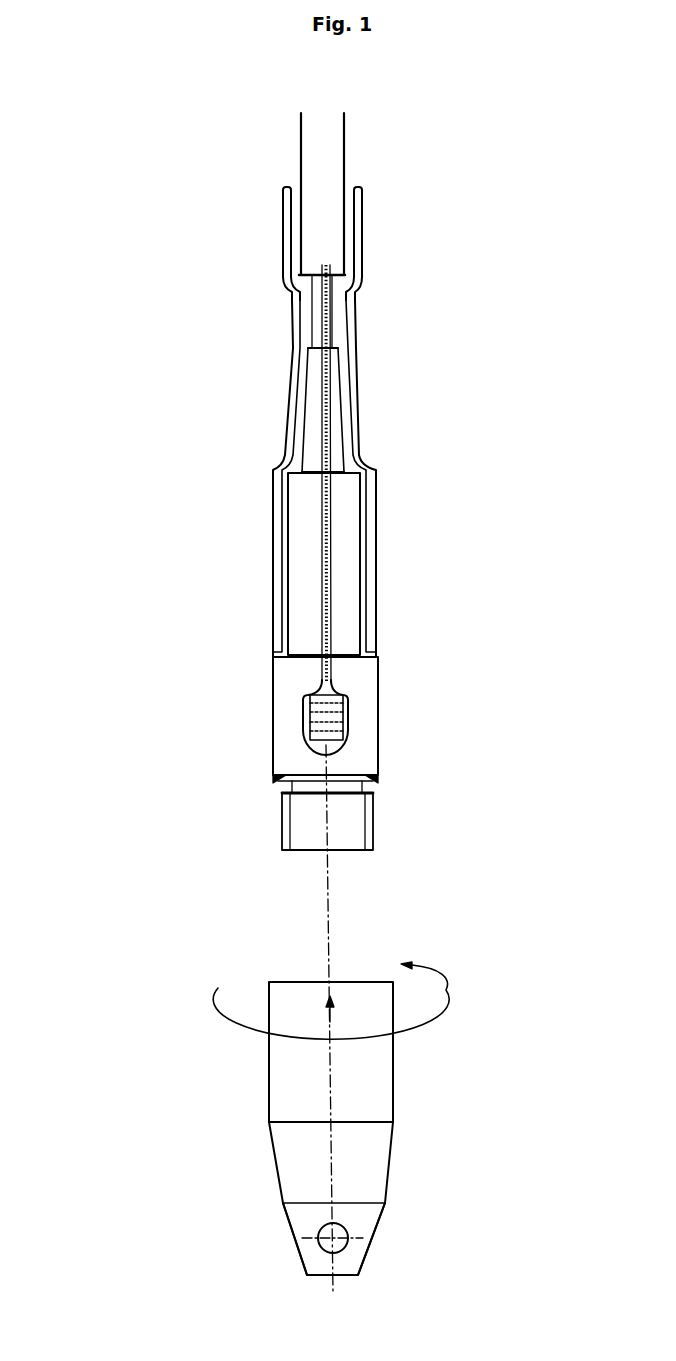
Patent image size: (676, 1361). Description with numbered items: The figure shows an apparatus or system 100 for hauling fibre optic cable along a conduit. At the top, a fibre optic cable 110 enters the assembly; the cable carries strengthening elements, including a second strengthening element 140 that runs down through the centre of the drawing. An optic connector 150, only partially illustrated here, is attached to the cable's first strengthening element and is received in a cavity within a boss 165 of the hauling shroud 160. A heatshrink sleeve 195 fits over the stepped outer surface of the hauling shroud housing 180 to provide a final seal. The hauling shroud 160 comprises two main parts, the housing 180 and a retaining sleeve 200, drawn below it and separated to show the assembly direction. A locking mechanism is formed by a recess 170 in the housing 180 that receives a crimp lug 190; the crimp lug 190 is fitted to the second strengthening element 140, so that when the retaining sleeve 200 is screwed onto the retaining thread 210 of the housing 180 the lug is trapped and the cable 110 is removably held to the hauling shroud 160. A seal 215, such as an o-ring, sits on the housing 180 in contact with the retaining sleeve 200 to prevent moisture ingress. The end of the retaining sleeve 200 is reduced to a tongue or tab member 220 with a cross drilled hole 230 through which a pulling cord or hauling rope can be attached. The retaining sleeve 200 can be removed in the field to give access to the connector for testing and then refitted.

The apparatus/system 100 is at (115, 112).
The fibre optic cable 110 is at (347, 147).
The heatshrink sleeve 195 is at (364, 260).
The optic connector 150 is at (302, 391).
The boss 165 is at (363, 483).
The second strengthening element 140 is at (332, 547).
The hauling shroud housing 180 is at (393, 645).
The recess 170 is at (300, 727).
The crimp lug 190 is at (352, 715).
The seal 215 is at (269, 785).
The retaining thread 210 is at (375, 815).
The hauling shroud 160 is at (269, 797).
The retaining sleeve 200 is at (413, 1087).
The tongue or tab member 220 is at (292, 1222).
The hole 230 is at (403, 1247).